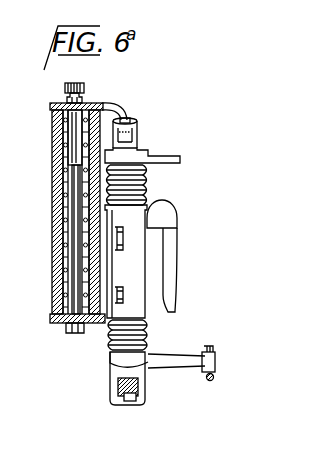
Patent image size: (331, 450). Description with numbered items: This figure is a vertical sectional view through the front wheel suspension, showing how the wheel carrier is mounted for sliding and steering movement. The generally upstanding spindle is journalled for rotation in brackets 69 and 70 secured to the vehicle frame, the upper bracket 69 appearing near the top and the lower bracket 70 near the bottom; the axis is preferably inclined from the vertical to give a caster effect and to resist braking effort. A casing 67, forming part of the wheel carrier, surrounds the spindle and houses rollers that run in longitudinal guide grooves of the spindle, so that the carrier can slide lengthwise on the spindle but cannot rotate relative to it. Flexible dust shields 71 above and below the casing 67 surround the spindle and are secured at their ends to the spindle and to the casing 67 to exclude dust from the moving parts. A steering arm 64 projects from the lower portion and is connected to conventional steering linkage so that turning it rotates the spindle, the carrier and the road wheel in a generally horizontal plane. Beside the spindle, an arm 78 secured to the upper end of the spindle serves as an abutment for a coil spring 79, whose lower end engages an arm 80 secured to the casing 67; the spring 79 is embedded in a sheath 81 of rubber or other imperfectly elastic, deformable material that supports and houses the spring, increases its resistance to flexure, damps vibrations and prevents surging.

The steering arm 64 is at (220, 372).
The casing 67 is at (135, 256).
The bracket 69 is at (143, 133).
The bracket 70 is at (140, 388).
The flexible dust shields 71 is at (148, 183).
The arm 78 is at (108, 104).
The coil spring 79 is at (53, 150).
The arm 80 is at (55, 322).
The sheath 81 is at (52, 228).